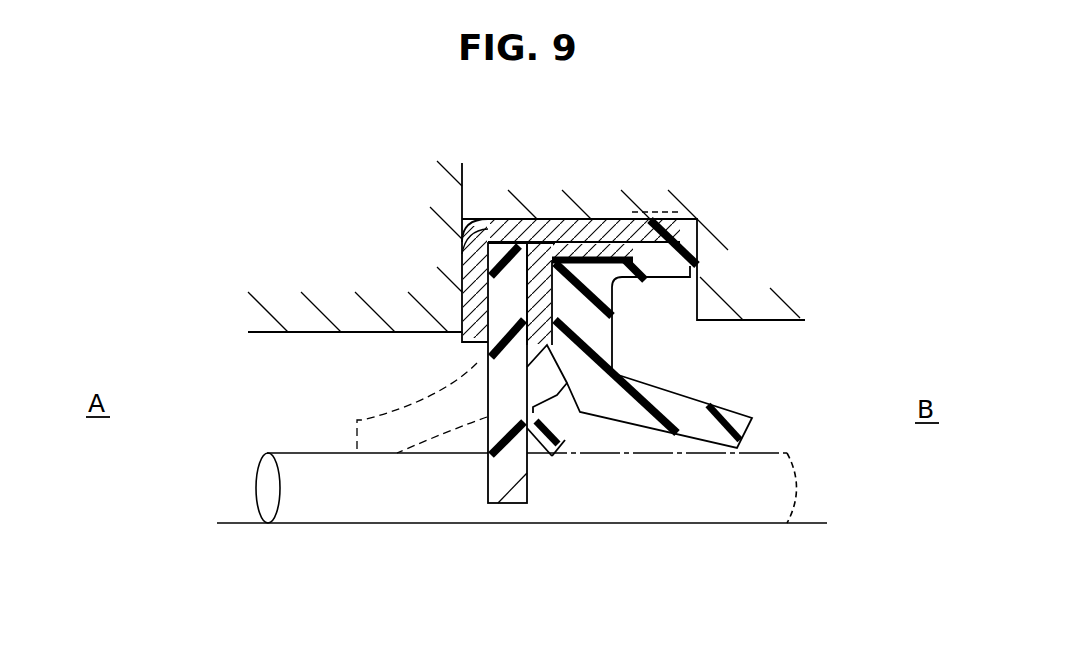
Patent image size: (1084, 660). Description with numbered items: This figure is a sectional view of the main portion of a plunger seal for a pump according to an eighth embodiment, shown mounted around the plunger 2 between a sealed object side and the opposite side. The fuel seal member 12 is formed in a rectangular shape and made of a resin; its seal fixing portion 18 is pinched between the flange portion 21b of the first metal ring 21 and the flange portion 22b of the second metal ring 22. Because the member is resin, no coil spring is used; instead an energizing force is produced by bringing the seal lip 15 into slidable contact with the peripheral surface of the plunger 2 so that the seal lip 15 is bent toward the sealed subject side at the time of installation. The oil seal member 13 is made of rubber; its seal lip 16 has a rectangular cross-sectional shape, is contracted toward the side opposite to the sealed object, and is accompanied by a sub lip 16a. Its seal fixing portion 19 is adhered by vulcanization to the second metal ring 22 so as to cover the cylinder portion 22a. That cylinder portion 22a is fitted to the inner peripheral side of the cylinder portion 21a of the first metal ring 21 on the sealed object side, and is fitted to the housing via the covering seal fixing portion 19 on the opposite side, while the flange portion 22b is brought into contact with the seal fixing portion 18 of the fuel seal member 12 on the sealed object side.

The plunger 2 is at (332, 498).
The fuel seal member 12 is at (480, 357).
The oil seal member 13 is at (624, 298).
The seal lip 15 is at (507, 468).
The seal lip 16 is at (713, 433).
The sub lip 16a is at (553, 427).
The seal fixing portion 18 is at (520, 246).
The seal fixing portion 19 is at (697, 219).
The first metal ring 21 is at (507, 230).
The cylinder portion 21a is at (572, 248).
The flange portion 21b is at (477, 267).
The second metal ring 22 is at (538, 246).
The cylinder portion 22a is at (622, 247).
The flange portion 22b is at (528, 307).